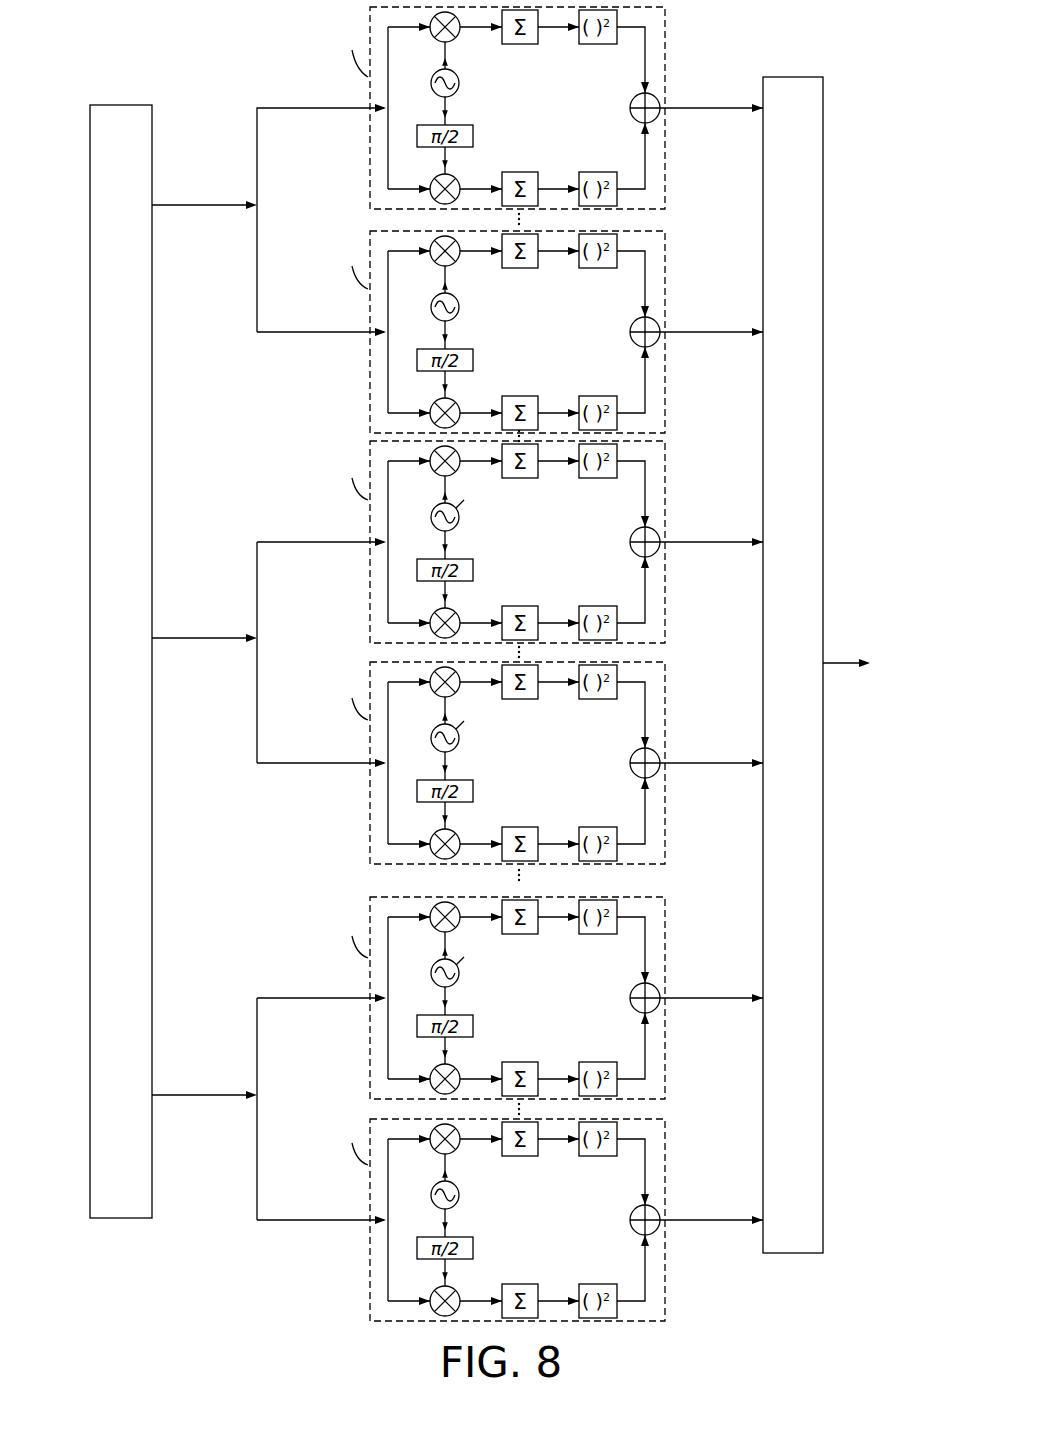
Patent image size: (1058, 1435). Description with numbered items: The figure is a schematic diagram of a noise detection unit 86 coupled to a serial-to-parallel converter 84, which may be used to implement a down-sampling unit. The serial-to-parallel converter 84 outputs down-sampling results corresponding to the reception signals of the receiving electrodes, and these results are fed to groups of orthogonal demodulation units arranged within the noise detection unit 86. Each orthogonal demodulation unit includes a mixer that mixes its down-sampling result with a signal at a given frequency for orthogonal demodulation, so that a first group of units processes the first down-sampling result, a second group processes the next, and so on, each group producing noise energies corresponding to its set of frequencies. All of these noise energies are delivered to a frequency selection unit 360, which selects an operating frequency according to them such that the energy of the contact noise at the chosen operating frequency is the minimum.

The serial-to-parallel converter 84 is at (120, 105).
The noise detection unit 86 is at (240, 58).
The frequency selection unit 360 is at (800, 77).